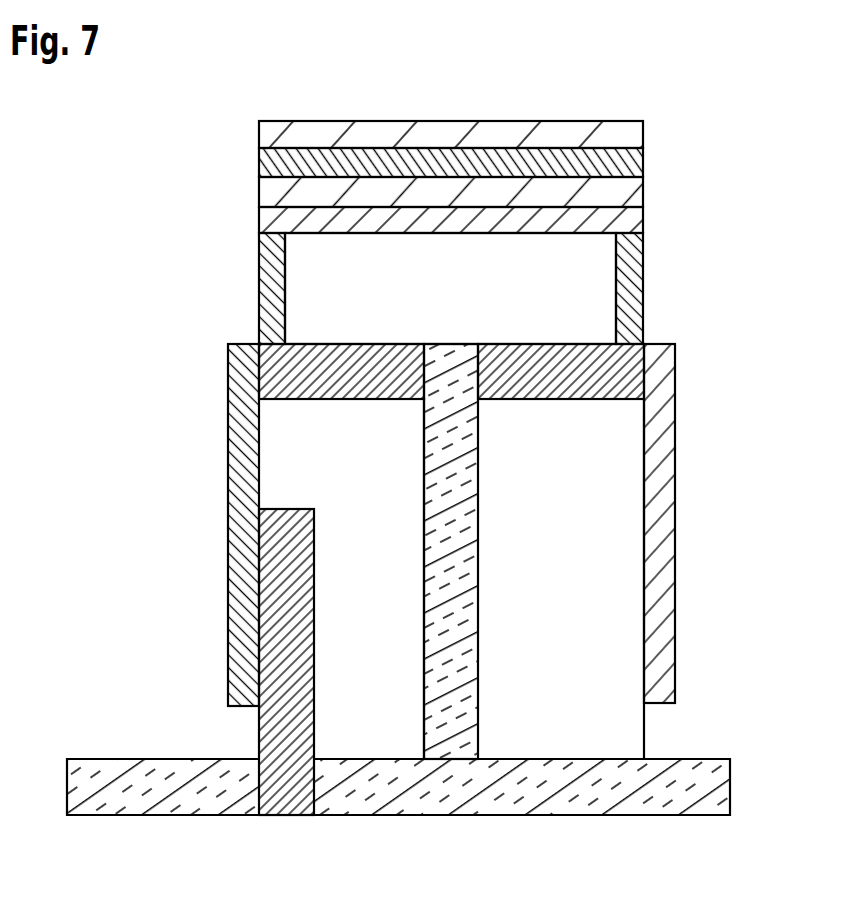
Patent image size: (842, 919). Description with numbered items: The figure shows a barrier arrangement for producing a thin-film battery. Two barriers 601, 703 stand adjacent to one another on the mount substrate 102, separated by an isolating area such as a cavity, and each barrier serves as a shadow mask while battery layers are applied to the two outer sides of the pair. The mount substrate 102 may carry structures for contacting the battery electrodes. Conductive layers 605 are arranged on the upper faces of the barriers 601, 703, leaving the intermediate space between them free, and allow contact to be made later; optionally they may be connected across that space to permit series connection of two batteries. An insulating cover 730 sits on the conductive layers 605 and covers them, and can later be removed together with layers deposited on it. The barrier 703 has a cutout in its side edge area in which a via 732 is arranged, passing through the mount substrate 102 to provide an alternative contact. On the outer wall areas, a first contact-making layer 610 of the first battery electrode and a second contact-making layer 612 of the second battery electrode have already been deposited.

The insulating cover 730 is at (461, 302).
The conductive layers 605 is at (287, 385).
The barrier 703 is at (401, 478).
The barrier 601 is at (588, 478).
The second contact-making layer 612 is at (238, 581).
The first contact-making layer 610 is at (663, 592).
The via 732 is at (270, 727).
The mount substrate 102 is at (118, 800).